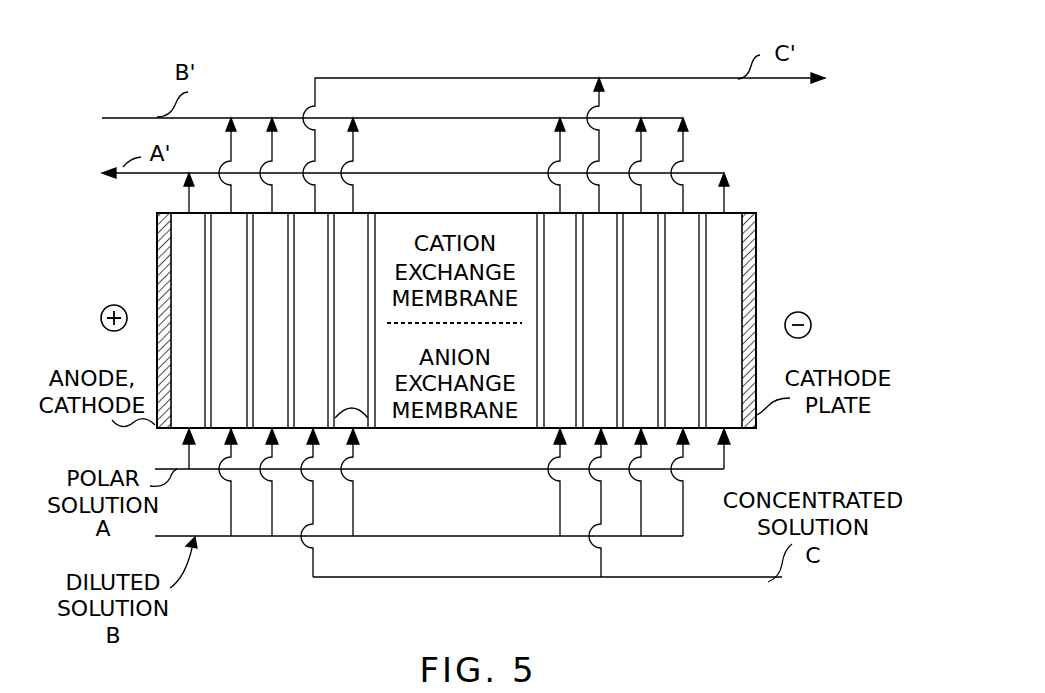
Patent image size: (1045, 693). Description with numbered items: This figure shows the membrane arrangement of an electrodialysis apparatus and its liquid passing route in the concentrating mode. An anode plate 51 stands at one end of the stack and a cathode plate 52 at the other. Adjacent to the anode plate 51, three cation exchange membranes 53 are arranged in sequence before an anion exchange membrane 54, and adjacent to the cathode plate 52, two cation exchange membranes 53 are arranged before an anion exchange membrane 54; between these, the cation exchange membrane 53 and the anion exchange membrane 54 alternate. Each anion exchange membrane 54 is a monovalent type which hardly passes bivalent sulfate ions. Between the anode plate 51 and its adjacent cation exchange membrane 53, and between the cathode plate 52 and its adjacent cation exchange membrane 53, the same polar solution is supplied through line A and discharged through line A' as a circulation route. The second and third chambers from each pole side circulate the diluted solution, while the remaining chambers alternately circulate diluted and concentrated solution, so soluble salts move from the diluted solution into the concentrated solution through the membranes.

The anode plate 51 is at (155, 280).
The cathode plate 52 is at (757, 272).
The cation exchange membrane 53 is at (213, 362).
The anion exchange membrane 54 is at (337, 362).